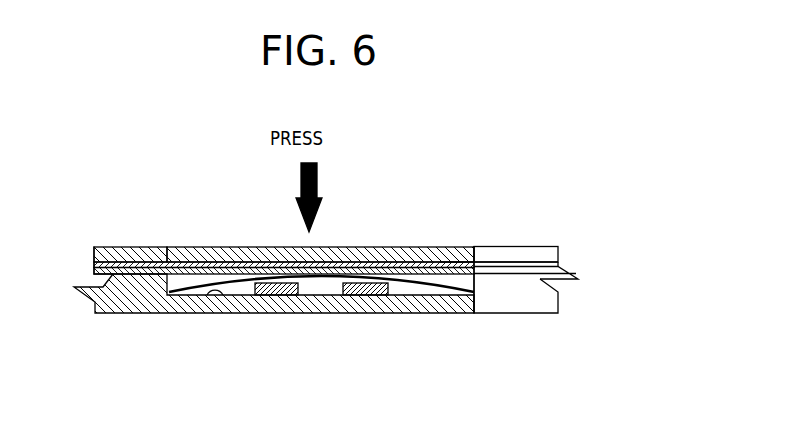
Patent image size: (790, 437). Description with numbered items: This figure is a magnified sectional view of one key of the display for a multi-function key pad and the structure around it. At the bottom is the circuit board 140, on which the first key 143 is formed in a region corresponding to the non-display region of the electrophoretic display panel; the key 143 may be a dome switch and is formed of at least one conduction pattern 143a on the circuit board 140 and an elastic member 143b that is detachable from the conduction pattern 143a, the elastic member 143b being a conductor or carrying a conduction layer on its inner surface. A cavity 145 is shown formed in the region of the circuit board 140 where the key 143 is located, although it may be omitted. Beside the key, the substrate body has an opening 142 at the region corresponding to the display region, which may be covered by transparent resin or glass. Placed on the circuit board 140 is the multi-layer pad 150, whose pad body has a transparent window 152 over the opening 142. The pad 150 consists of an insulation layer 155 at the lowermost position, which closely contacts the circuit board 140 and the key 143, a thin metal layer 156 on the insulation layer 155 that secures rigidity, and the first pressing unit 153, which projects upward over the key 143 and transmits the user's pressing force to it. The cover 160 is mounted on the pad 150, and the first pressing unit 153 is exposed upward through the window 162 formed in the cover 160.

The circuit board 140 is at (118, 305).
The opening 142 is at (527, 305).
The first key 143 is at (427, 368).
The conduction pattern 143a is at (285, 295).
The elastic member 143b is at (430, 283).
The cavity 145 is at (208, 295).
The pad 150 is at (537, 195).
The transparent window 152 is at (518, 272).
The first pressing unit 153 is at (418, 250).
The insulation layer 155 is at (468, 256).
The metal layer 156 is at (438, 265).
The cover 160 is at (118, 252).
The window 162 is at (553, 253).